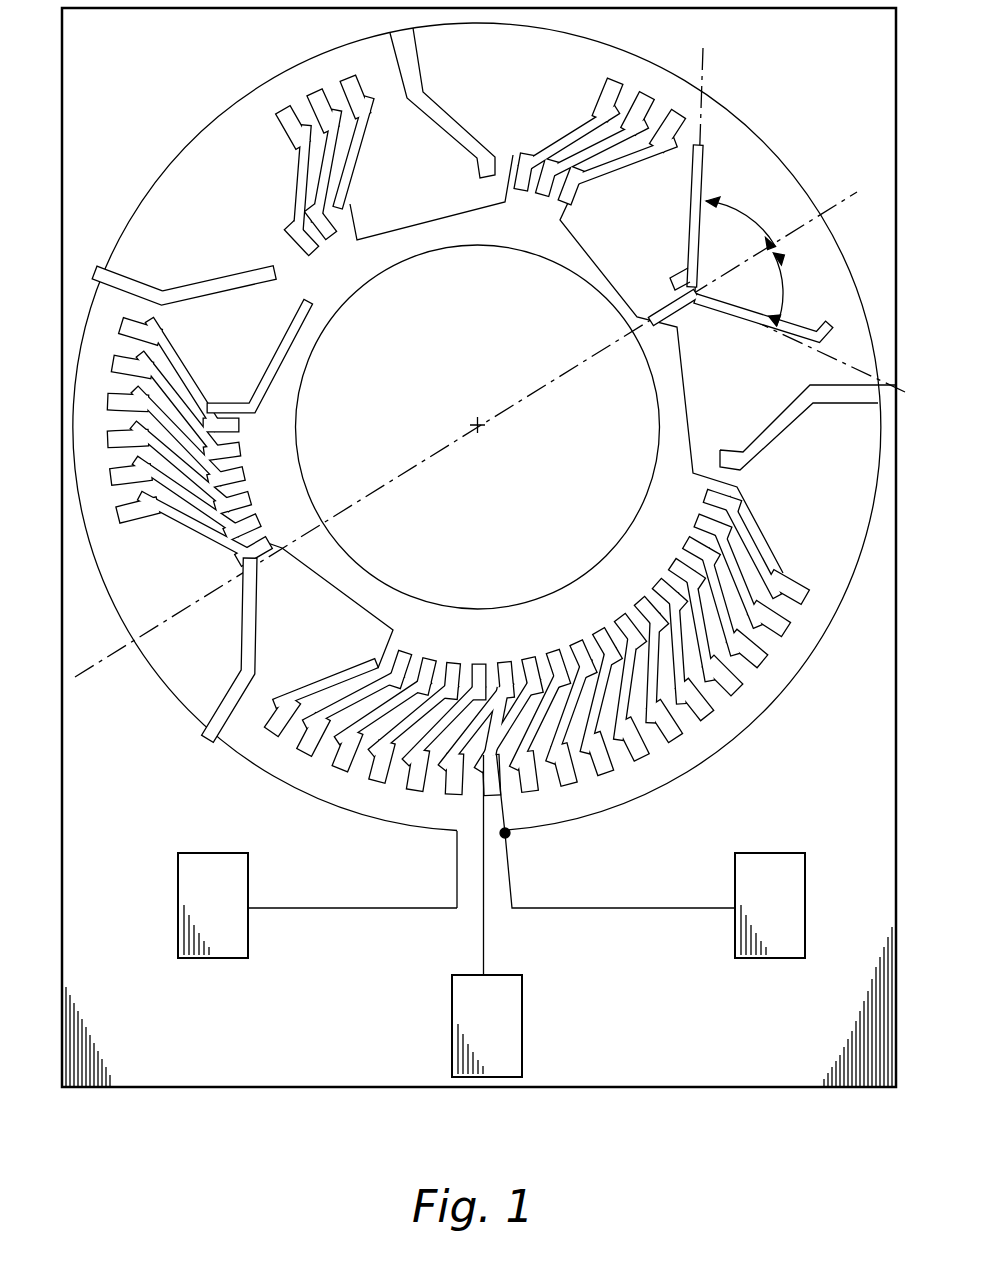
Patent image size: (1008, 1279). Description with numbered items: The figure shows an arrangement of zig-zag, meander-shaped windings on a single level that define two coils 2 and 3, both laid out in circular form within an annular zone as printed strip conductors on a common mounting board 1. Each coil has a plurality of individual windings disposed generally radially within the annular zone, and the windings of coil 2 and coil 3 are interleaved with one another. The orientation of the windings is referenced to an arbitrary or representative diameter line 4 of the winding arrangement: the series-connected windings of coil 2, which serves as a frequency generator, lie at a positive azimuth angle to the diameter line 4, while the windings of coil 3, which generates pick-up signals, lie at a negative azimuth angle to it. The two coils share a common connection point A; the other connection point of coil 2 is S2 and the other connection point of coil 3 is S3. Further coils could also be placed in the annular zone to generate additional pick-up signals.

The common mounting board 1 is at (680, 1087).
The coil 2 is at (748, 648).
The coil 3 is at (786, 424).
The diameter line 4 is at (842, 200).
The connection point S2 is at (522, 1025).
The connection point S3 is at (218, 958).
The common connection point A is at (780, 958).